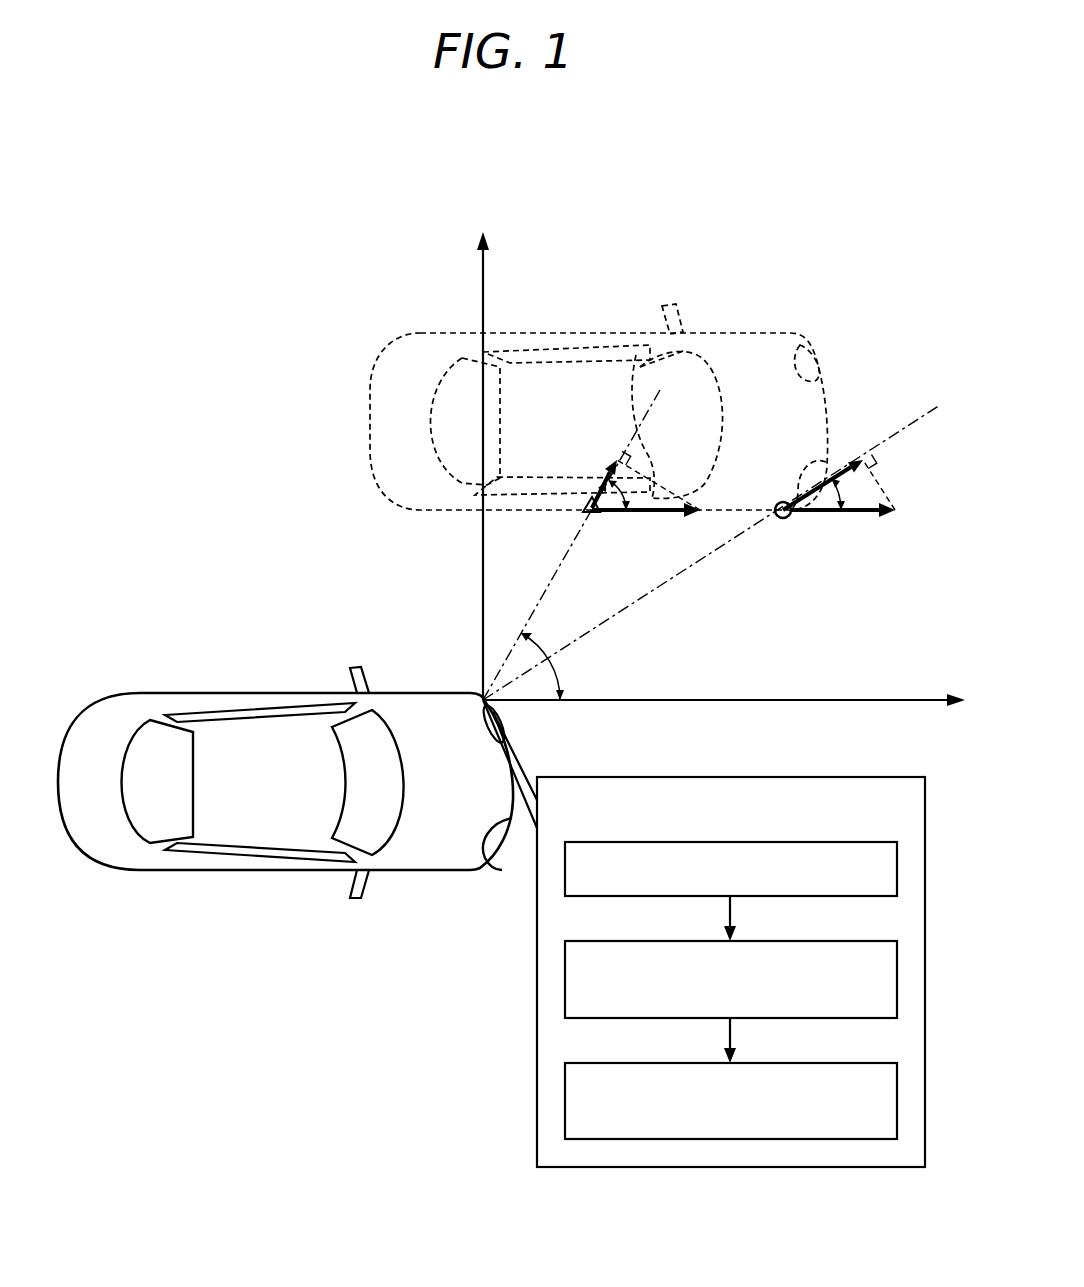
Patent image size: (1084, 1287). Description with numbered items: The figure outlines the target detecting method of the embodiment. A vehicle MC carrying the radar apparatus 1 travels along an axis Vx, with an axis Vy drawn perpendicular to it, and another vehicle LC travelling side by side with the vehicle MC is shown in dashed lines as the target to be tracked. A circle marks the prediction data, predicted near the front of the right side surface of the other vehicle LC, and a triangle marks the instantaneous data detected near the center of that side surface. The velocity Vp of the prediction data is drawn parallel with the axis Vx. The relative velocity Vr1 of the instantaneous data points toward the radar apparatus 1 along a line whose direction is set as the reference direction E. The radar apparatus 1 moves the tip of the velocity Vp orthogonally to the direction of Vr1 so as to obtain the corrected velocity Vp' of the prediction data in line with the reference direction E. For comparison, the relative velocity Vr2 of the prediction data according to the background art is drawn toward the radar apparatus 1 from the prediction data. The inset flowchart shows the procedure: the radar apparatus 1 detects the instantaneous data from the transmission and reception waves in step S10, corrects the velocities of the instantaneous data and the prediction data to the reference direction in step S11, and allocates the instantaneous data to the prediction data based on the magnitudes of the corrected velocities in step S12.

The axis Vy is at (464, 466).
The axis Vx is at (727, 716).
The vehicle MC is at (197, 693).
The radar apparatus 1 is at (474, 706).
The other vehicle LC is at (745, 332).
The reference direction E is at (632, 345).
The velocity of the prediction data Vp is at (739, 518).
The corrected velocity of the prediction data Vp' is at (605, 528).
The relative velocity of the instantaneous data Vr1 is at (592, 468).
The relative velocity of the prediction data Vr2 is at (845, 455).
The instantaneous data detecting step S10 is at (841, 843).
The velocity correcting step S11 is at (841, 942).
The allocating step S12 is at (841, 1064).